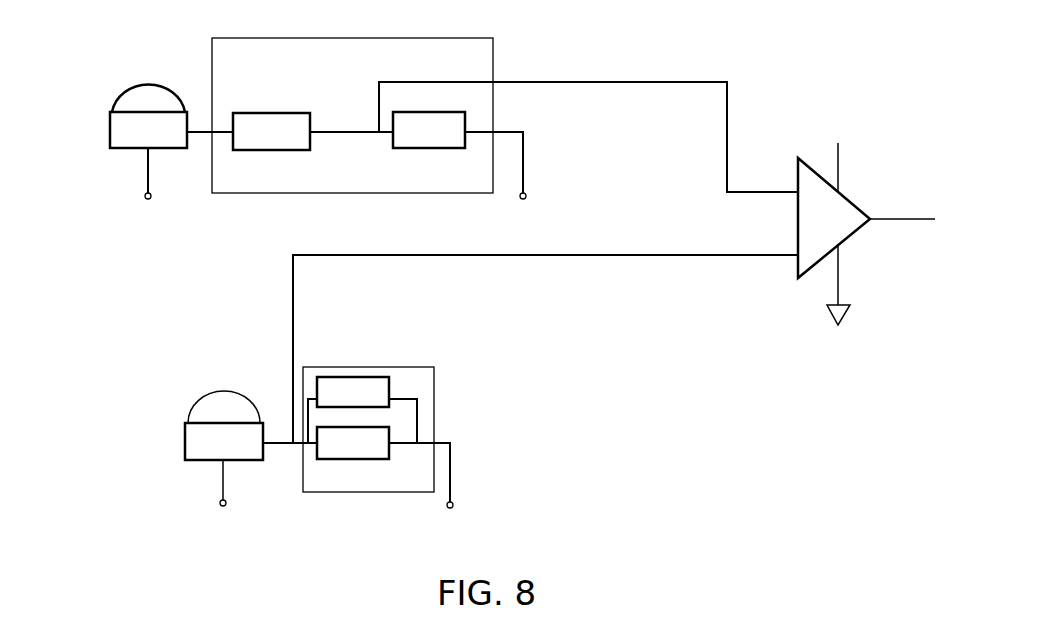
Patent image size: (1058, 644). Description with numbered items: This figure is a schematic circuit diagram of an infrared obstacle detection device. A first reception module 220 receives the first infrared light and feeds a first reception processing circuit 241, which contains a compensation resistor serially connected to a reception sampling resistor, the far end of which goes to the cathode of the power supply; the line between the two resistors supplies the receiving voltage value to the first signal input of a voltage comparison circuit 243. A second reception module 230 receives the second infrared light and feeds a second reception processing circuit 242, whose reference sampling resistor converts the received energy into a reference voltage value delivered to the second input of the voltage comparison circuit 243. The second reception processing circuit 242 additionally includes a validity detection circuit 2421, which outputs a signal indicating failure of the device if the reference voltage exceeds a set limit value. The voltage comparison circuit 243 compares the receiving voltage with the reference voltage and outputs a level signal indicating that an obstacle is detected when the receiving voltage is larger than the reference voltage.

The first reception module 220 is at (120, 128).
The first reception processing circuit 241 is at (247, 185).
The voltage comparison circuit 243 is at (810, 177).
The second reception module 230 is at (197, 442).
The second reception processing circuit 242 is at (354, 431).
The validity detection circuit 2421 is at (354, 390).